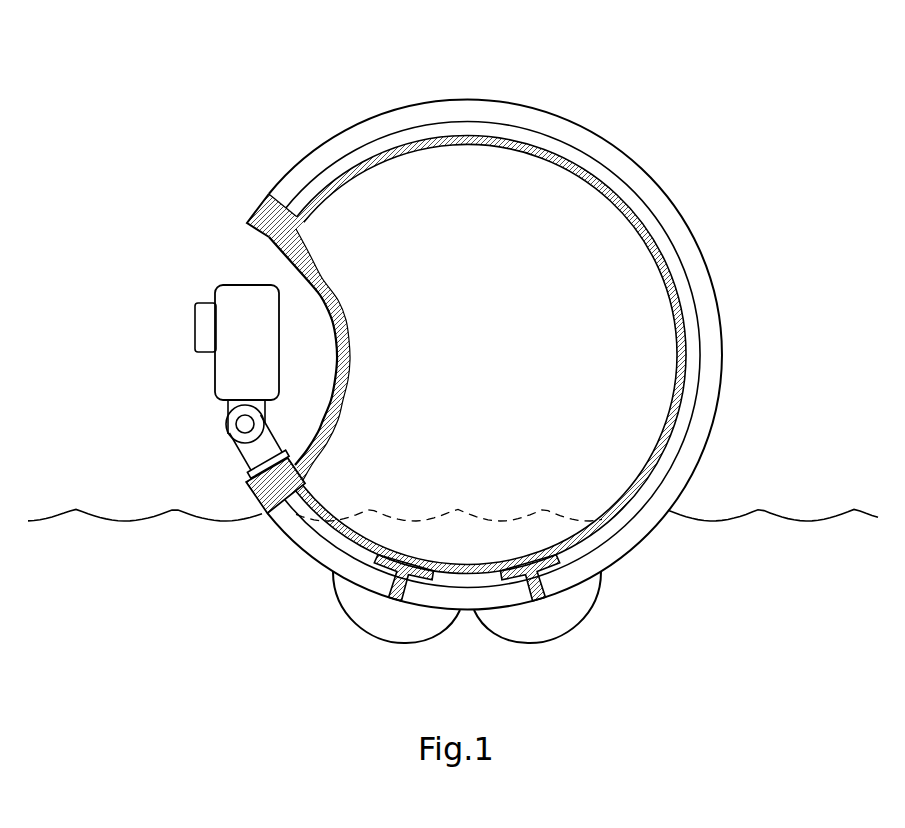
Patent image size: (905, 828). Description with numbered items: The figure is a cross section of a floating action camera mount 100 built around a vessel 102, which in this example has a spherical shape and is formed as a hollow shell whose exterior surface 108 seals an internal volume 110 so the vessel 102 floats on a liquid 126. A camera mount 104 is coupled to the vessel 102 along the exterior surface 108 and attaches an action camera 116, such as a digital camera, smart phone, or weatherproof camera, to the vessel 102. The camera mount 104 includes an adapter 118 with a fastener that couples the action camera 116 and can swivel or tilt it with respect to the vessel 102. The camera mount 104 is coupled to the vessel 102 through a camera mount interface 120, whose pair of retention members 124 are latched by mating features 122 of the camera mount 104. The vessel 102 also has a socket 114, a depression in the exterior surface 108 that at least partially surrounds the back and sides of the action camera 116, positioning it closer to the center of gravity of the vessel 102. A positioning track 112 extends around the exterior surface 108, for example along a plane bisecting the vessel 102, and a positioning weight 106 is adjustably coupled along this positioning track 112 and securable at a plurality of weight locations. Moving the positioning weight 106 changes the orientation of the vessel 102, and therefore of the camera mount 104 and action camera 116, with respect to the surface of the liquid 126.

The floating action camera mount 100 is at (227, 57).
The vessel 102 is at (336, 134).
The camera mount 104 is at (224, 418).
The positioning weight 106 is at (352, 636).
The exterior surface 108 is at (258, 212).
The internal volume 110 is at (678, 347).
The positioning track 112 is at (638, 166).
The socket 114 is at (327, 332).
The action camera 116 is at (216, 288).
The adapter 118 is at (234, 420).
The camera mount interface 120 is at (238, 488).
The mating features 122 is at (264, 461).
The retention members 124 is at (243, 408).
The liquid 126 is at (759, 512).